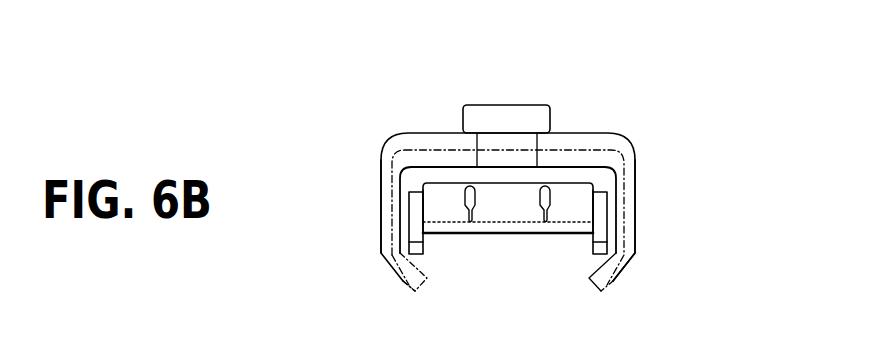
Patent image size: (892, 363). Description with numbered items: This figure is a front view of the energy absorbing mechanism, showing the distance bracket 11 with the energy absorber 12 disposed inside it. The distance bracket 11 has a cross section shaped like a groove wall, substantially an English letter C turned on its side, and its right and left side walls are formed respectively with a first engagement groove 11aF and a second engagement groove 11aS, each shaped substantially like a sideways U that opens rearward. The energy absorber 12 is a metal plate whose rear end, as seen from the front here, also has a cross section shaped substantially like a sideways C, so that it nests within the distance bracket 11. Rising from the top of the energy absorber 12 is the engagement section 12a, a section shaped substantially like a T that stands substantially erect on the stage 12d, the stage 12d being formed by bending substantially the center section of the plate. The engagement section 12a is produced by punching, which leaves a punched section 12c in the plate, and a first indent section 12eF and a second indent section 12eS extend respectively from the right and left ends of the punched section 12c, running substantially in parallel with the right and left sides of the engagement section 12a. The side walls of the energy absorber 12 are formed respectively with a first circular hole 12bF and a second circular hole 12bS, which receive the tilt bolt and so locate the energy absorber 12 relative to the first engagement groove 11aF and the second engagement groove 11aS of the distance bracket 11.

The distance bracket 11 is at (625, 136).
The first engagement groove 11aF is at (400, 218).
The second engagement groove 11aS is at (624, 210).
The energy absorber 12 is at (433, 153).
The engagement section 12a is at (510, 110).
The punched section 12c is at (468, 188).
The stage 12d is at (517, 236).
The first circular hole 12bF is at (424, 243).
The second circular hole 12bS is at (592, 241).
The first indent section 12eF is at (459, 205).
The second indent section 12eS is at (560, 204).